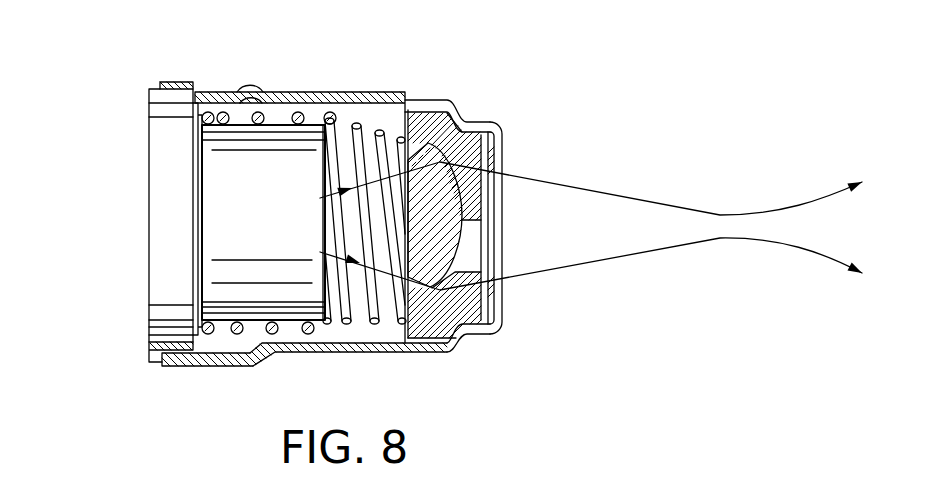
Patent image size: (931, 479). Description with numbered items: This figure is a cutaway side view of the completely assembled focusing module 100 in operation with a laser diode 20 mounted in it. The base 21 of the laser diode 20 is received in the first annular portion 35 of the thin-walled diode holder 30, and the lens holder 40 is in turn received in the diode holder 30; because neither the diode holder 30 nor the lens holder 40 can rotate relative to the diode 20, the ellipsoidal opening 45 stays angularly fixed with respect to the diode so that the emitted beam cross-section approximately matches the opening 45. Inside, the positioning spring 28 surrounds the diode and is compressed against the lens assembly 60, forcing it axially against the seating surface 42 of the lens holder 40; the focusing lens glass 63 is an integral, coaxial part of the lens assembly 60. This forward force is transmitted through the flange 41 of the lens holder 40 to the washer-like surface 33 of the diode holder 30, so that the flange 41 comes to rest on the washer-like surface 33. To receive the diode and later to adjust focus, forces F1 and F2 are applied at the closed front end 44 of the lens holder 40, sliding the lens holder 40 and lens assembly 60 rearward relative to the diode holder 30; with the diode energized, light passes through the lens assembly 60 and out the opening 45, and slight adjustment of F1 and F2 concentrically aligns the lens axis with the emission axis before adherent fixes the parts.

The laser diode 20 is at (120, 183).
The base of the laser diode 21 is at (163, 242).
The positioning spring 28 is at (343, 332).
The diode holder 30 is at (290, 82).
The washer-like surface of the diode holder 33 is at (257, 92).
The first annular portion 35 is at (222, 367).
The lens holder 40 is at (577, 171).
The flange portion 41 is at (230, 94).
The seating surface 42 is at (458, 343).
The closed front end 44 is at (500, 293).
The opening 45 is at (500, 206).
The lens assembly 60 is at (470, 125).
The focusing lens glass 63 is at (480, 252).
The focusing module 100 is at (382, 74).
The force F1 is at (512, 143).
The force F2 is at (512, 305).